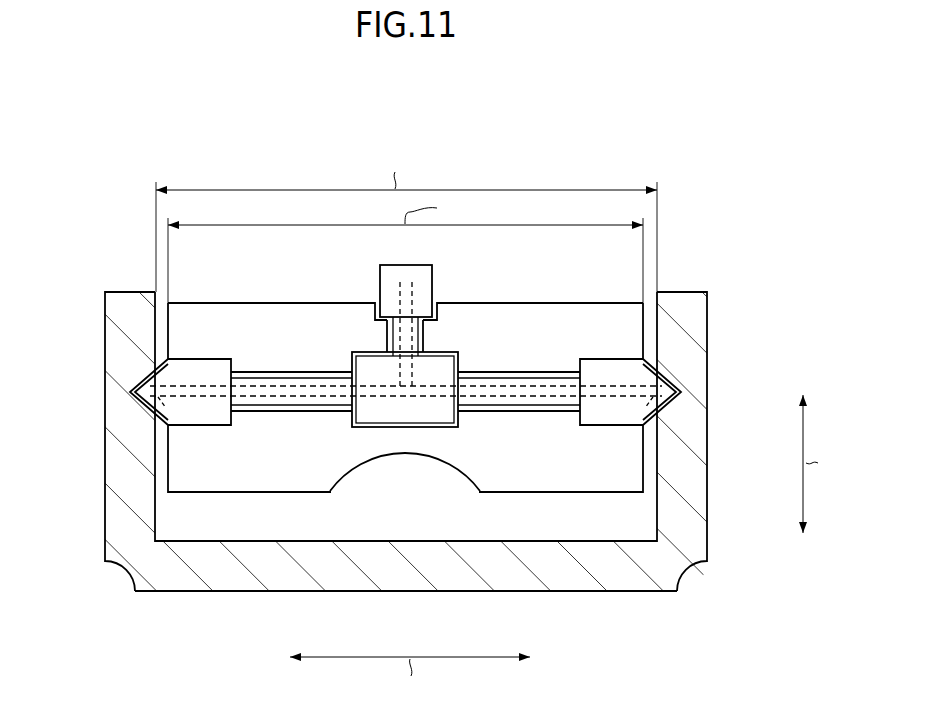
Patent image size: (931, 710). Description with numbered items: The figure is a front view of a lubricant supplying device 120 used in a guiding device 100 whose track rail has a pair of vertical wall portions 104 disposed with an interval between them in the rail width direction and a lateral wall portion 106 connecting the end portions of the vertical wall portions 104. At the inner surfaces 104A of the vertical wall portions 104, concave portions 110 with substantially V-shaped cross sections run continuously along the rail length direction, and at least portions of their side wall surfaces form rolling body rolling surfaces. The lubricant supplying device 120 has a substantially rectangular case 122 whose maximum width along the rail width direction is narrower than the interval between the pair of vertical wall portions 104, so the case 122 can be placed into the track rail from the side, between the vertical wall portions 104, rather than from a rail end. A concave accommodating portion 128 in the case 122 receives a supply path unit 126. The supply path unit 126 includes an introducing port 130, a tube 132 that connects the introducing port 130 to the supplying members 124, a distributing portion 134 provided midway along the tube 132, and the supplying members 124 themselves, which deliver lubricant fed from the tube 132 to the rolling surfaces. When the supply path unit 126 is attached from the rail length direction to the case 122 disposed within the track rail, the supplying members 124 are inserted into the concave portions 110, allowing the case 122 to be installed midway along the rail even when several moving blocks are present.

The guiding device 100 is at (690, 218).
The vertical wall portions 104 is at (117, 290).
The inner surfaces 104A is at (157, 529).
The lateral wall portion 106 is at (578, 593).
The concave portions 110 is at (163, 372).
The lubricant supplying device 120 is at (568, 302).
The case 122 is at (296, 302).
The supplying members 124 is at (194, 428).
The supply path unit 126 is at (470, 413).
The accommodating portion 128 is at (248, 372).
The introducing port 130 is at (433, 288).
The tube 132 is at (424, 337).
The distributing portion 134 is at (364, 427).